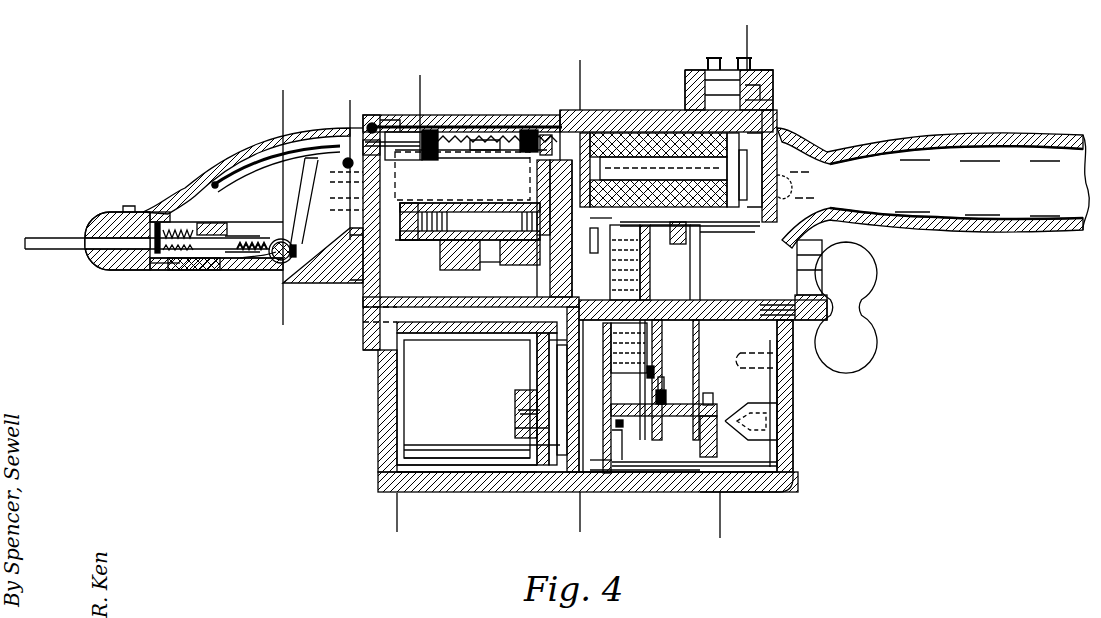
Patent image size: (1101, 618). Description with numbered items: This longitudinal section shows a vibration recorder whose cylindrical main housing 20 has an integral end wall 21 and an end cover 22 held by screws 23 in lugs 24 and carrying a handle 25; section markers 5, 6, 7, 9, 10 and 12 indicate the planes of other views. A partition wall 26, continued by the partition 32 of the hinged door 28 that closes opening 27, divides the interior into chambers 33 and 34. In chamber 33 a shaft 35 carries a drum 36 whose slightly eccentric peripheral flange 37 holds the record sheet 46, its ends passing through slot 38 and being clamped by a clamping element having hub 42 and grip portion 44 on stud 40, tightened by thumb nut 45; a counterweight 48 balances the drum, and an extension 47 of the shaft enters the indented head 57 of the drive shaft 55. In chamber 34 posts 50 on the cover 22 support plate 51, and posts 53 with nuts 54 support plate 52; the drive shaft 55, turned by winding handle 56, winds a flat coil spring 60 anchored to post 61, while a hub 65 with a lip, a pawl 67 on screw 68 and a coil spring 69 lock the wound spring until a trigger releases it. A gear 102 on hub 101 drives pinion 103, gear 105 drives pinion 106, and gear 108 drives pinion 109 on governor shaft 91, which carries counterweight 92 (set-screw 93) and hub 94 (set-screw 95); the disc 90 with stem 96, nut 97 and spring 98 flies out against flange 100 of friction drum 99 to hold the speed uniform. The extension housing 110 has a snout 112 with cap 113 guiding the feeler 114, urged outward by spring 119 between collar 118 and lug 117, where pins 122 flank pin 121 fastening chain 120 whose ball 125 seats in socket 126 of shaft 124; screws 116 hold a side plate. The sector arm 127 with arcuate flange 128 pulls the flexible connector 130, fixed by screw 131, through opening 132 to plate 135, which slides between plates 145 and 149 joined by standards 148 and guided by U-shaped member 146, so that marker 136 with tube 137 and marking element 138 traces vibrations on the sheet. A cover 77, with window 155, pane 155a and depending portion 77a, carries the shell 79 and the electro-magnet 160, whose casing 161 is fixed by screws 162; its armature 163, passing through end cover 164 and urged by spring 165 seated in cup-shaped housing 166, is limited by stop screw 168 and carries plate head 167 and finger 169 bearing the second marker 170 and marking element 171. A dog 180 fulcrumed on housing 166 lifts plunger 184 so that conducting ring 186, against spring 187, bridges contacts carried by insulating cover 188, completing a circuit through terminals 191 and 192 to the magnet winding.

The section line 5- 5 is at (588, 530).
The section line 6- 6 is at (733, 535).
The section line 7- 7 is at (618, 452).
The section line 9- 9 is at (350, 178).
The section line 10- 10 is at (408, 529).
The section line 12- 12 is at (287, 325).
The main housing 20 is at (712, 493).
The end wall 21 is at (362, 296).
The end cover 22 is at (787, 460).
The screws 23 is at (792, 404).
The lugs 24 is at (761, 440).
The handle 25 is at (930, 140).
The partition wall 26 is at (556, 253).
The opening 27 is at (591, 478).
The door 28 is at (380, 391).
The partition 32 is at (556, 366).
The chamber 33 is at (568, 394).
The chamber 34 is at (672, 472).
The shaft 35 is at (462, 322).
The drum 36 is at (538, 371).
The peripheral flange 37 is at (417, 462).
The slot 38 is at (528, 178).
The stud 40 is at (440, 240).
The hub 42 is at (500, 262).
The grip portion 44 is at (465, 262).
The thumb nut 45 is at (414, 240).
The record sheet 46 is at (469, 492).
The extension 47 is at (572, 295).
The counterweight 48 is at (518, 394).
The posts 50 is at (730, 362).
The plate 51 is at (691, 288).
The plate 52 is at (625, 266).
The posts 53 is at (641, 230).
The nuts 54 is at (596, 237).
The drive shaft 55 is at (687, 278).
The winding handle 56 is at (862, 268).
The enlarged head portion 57 is at (560, 268).
The flat coil spring 60 is at (648, 274).
The post 61 is at (673, 228).
The hub 65 is at (760, 320).
The pawl 67 is at (791, 275).
The screw 68 is at (793, 246).
The coil spring 69 is at (793, 262).
The cover 77 is at (596, 110).
The depending portion 77a is at (590, 110).
The shell portion 79 is at (690, 110).
The centrifugal disc 90 is at (568, 348).
The governor shaft 91 is at (700, 443).
The counterweight 92 is at (680, 462).
The set-screw 93 is at (718, 384).
The hub 94 is at (540, 413).
The set-screw 95 is at (613, 470).
The stem 96 is at (585, 486).
The adjusting nut 97 is at (560, 443).
The coil spring 98 is at (548, 431).
The friction drum 99 is at (580, 297).
The circular flange 100 is at (609, 485).
The hub 101 is at (656, 348).
The gear 102 is at (649, 266).
The pinion 103 is at (662, 382).
The gear 105 is at (667, 342).
The pinion 106 is at (673, 420).
The gear 108 is at (648, 370).
The pinion 109 is at (625, 428).
The extension housing 110 is at (238, 148).
The snout-like end portion 112 is at (129, 212).
The cap 113 is at (101, 228).
The feeler 114 is at (46, 240).
The screws 116 is at (192, 268).
The lug 117 is at (204, 236).
The collar 118 is at (165, 272).
The spring 119 is at (176, 262).
The chain 120 is at (242, 262).
The pin 121 is at (225, 260).
The pins 122 is at (238, 238).
The shaft 124 is at (268, 270).
The ball 125 is at (336, 192).
The socket 126 is at (280, 258).
The sector-shaped arm 127 is at (280, 199).
The arcuate flange portion 128 is at (272, 160).
The flexible connector 130 is at (355, 146).
The screw 131 is at (215, 185).
The opening 132 is at (384, 126).
The plate 135 is at (363, 127).
The marker 136 is at (460, 126).
The tube 137 is at (460, 135).
The marking element 138 is at (418, 158).
The supporting plate 145 is at (455, 158).
The U-shaped member 146 is at (368, 126).
The standards 148 is at (480, 145).
The supporting plate 149 is at (390, 127).
The opening 155 is at (510, 120).
The pane 155a is at (432, 133).
The electro-magnet 160 is at (618, 133).
The metal casing 161 is at (622, 155).
The screws 162 is at (630, 132).
The armature 163 is at (718, 200).
The metal end cover 164 is at (738, 200).
The spring 165 is at (783, 183).
The cup-shaped housing 166 is at (818, 176).
The head plate 167 is at (584, 133).
The stop screw 168 is at (471, 218).
The finger 169 is at (572, 135).
The marker 170 is at (542, 132).
The marking element 171 is at (516, 150).
The dog 180 is at (777, 155).
The plunger 184 is at (773, 133).
The conducting ring 186 is at (773, 106).
The spring 187 is at (770, 90).
The cover 188 is at (768, 74).
The terminal 191 is at (745, 66).
The terminal 192 is at (712, 65).